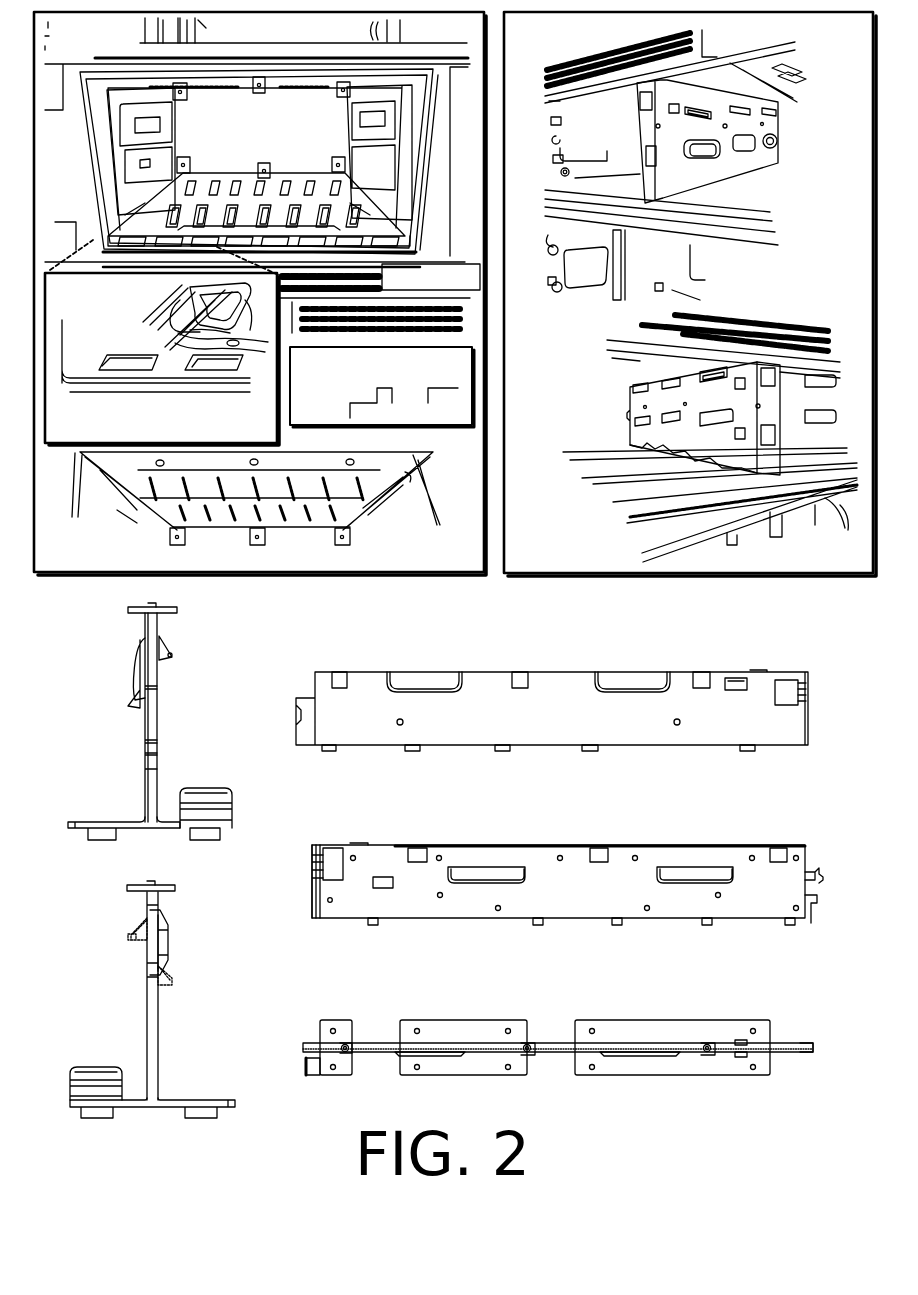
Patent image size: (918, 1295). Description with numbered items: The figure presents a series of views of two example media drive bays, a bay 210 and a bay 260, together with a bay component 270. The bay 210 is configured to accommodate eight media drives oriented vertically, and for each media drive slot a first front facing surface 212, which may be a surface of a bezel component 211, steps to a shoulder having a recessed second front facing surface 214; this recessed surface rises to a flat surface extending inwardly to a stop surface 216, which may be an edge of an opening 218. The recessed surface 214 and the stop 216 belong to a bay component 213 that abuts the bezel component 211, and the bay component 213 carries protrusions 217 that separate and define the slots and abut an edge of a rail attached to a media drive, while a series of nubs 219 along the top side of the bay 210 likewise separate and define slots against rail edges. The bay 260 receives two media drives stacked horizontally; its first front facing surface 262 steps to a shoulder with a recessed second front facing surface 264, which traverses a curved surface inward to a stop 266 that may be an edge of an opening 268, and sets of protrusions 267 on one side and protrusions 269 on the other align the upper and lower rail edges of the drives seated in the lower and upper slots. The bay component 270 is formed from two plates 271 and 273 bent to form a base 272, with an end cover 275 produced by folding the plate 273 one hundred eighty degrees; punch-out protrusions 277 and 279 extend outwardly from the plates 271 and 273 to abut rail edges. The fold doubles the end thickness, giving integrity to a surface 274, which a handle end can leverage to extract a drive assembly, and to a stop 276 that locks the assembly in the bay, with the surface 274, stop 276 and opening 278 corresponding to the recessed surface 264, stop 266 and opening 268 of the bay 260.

The bay 210 is at (110, 53).
The bezel component 211 is at (97, 392).
The first front facing surface 212 is at (118, 393).
The bay component 213 is at (158, 386).
The recessed second front facing surface 214 is at (121, 388).
The stop surface 216 is at (131, 355).
The protrusions 217 is at (137, 232).
The opening 218 is at (224, 372).
The nubs 219 is at (176, 530).
The bay 260 is at (556, 43).
The first front facing surface 262 is at (775, 100).
The recessed second front facing surface 264 is at (640, 93).
The stop 266 is at (630, 127).
The protrusions 267 is at (770, 150).
The opening 268 is at (672, 128).
The protrusions 269 is at (640, 422).
The bay component 270 is at (112, 628).
The plate 271 is at (147, 728).
The base 272 is at (130, 832).
The plate 273 is at (157, 712).
The surface 274 is at (163, 943).
The end cover 275 is at (152, 1015).
The stop 276 is at (797, 692).
The protrusions 277 is at (133, 697).
The opening 278 is at (330, 872).
The protrusions 279 is at (167, 660).